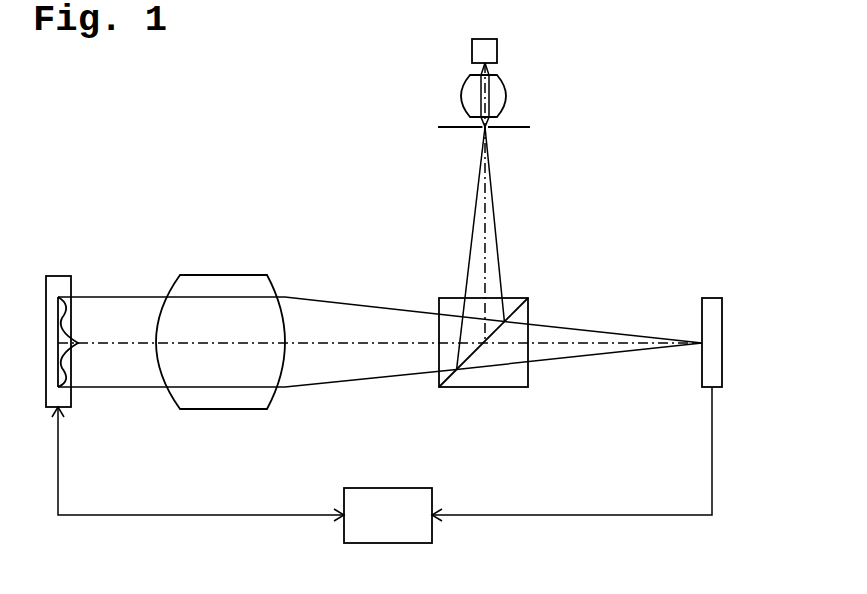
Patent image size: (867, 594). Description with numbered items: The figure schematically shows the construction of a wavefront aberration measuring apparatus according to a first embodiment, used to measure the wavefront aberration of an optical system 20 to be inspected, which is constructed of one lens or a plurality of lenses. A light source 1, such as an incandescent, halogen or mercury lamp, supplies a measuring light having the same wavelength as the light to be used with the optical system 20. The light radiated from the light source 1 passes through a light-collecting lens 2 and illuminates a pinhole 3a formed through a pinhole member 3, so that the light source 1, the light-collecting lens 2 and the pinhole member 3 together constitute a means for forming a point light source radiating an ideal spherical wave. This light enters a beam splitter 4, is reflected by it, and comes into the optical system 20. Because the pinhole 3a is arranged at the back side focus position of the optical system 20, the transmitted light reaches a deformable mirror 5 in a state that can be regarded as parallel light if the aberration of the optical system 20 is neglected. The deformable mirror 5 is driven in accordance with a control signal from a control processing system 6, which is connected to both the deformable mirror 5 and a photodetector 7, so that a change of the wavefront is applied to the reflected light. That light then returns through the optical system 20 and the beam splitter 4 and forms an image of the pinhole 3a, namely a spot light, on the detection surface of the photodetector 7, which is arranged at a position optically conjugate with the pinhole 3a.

The light source 1 is at (490, 53).
The light-collecting lens 2 is at (498, 97).
The pinhole member 3 is at (458, 125).
The pinhole 3a is at (487, 130).
The beam splitter 4 is at (450, 305).
The deformable mirror 5 is at (65, 267).
The control processing system 6 is at (397, 529).
The photodetector 7 is at (712, 307).
The optical system to be inspected 20 is at (223, 285).